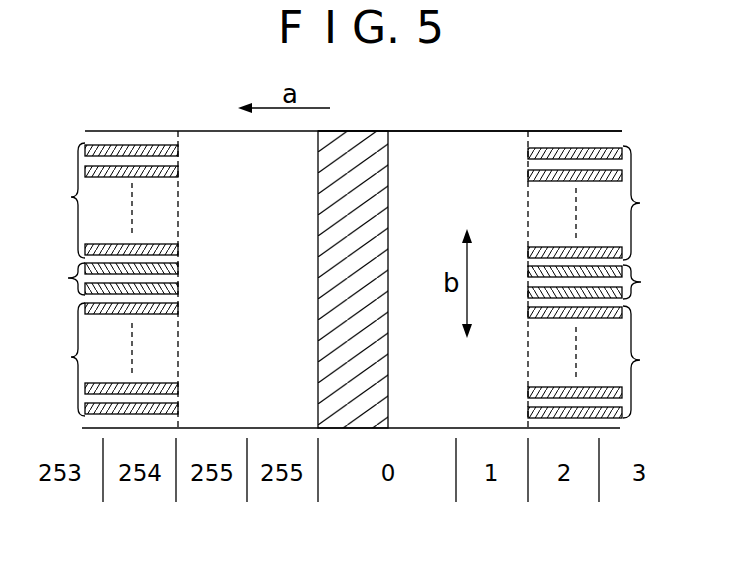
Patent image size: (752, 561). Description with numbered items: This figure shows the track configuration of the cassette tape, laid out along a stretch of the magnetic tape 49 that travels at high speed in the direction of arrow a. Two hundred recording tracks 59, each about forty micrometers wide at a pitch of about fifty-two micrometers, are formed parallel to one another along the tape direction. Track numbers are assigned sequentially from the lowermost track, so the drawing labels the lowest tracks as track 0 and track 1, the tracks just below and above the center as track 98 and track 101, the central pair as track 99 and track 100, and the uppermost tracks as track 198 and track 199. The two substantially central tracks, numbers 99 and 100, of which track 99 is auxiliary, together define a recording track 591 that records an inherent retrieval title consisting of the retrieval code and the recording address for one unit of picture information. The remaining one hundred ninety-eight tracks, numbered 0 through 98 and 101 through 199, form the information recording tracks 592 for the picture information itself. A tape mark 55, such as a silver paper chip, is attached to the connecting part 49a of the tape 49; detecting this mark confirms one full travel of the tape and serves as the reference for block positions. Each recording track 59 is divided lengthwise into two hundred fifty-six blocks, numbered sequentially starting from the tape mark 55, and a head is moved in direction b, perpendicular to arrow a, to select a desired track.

The recording tracks 59 is at (135, 141).
The information recording tracks 592 is at (52, 279).
The recording track 591 is at (57, 279).
The magnetic tape 49 is at (472, 131).
The connecting part 49a is at (366, 130).
The tape mark 55 is at (324, 210).
The track number 199 is at (150, 151).
The track number 198 is at (150, 171).
The track number 101 is at (150, 251).
The track number 100 is at (150, 269).
The track number 99 is at (146, 289).
The track number 98 is at (146, 309).
The track number 1 is at (142, 389).
The track number 0 is at (141, 409).